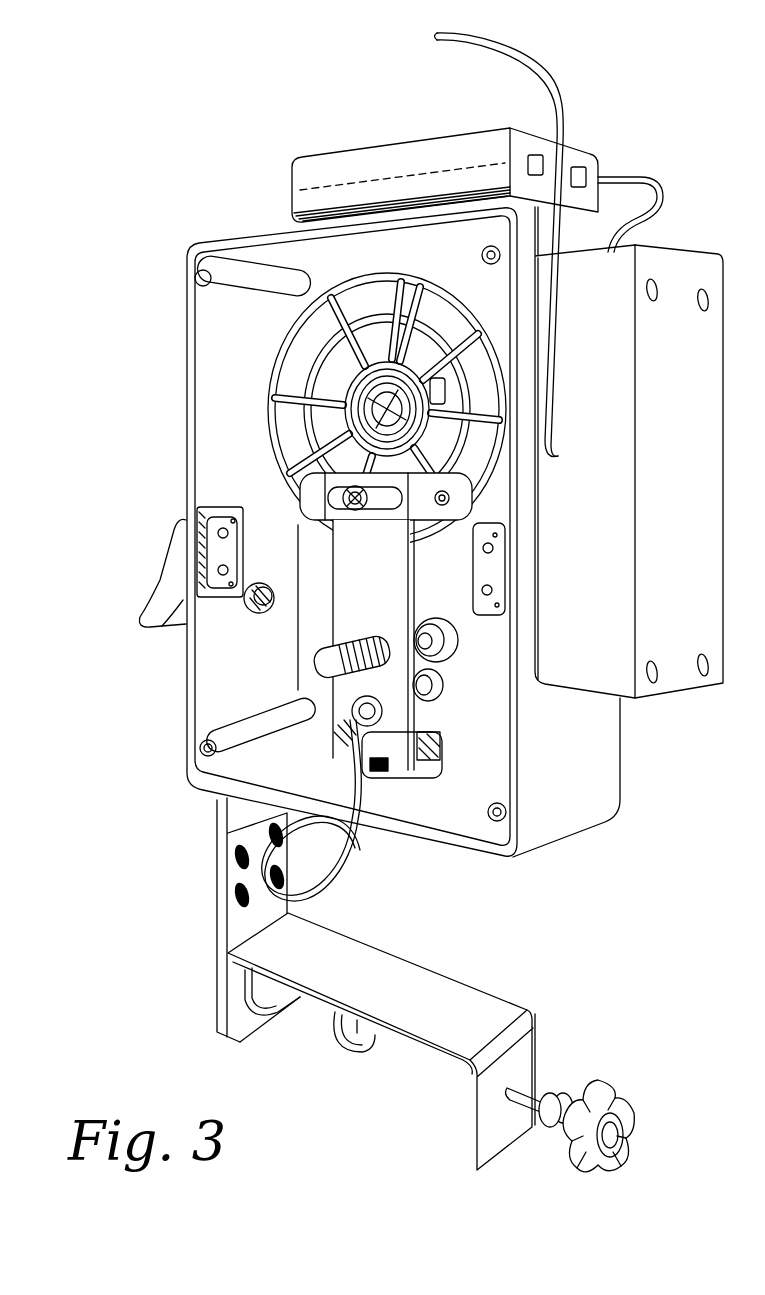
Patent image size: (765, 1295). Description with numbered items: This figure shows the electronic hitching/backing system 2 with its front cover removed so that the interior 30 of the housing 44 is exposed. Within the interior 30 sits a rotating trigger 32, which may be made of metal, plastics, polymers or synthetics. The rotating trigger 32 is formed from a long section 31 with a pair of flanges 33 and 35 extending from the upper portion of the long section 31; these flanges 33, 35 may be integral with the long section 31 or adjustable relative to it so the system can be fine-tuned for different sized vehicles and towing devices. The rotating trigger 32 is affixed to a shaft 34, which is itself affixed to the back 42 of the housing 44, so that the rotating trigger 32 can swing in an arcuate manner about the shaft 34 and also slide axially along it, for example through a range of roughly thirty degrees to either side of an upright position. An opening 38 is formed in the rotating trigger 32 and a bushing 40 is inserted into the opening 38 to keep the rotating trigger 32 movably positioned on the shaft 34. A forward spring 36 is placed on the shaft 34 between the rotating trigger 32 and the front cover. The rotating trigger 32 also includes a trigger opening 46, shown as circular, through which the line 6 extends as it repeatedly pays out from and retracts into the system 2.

The electronic hitching/backing system 2 is at (178, 222).
The line 6 is at (340, 835).
The interior 30 is at (212, 711).
The long section 31 is at (393, 707).
The rotating trigger 32 is at (355, 583).
The flange 33 is at (505, 487).
The shaft 34 is at (325, 672).
The flange 35 is at (302, 507).
The forward spring 36 is at (322, 733).
The opening 38 is at (462, 645).
The bushing 40 is at (335, 632).
The back 42 is at (482, 752).
The housing 44 is at (185, 312).
The trigger opening 46 is at (392, 712).